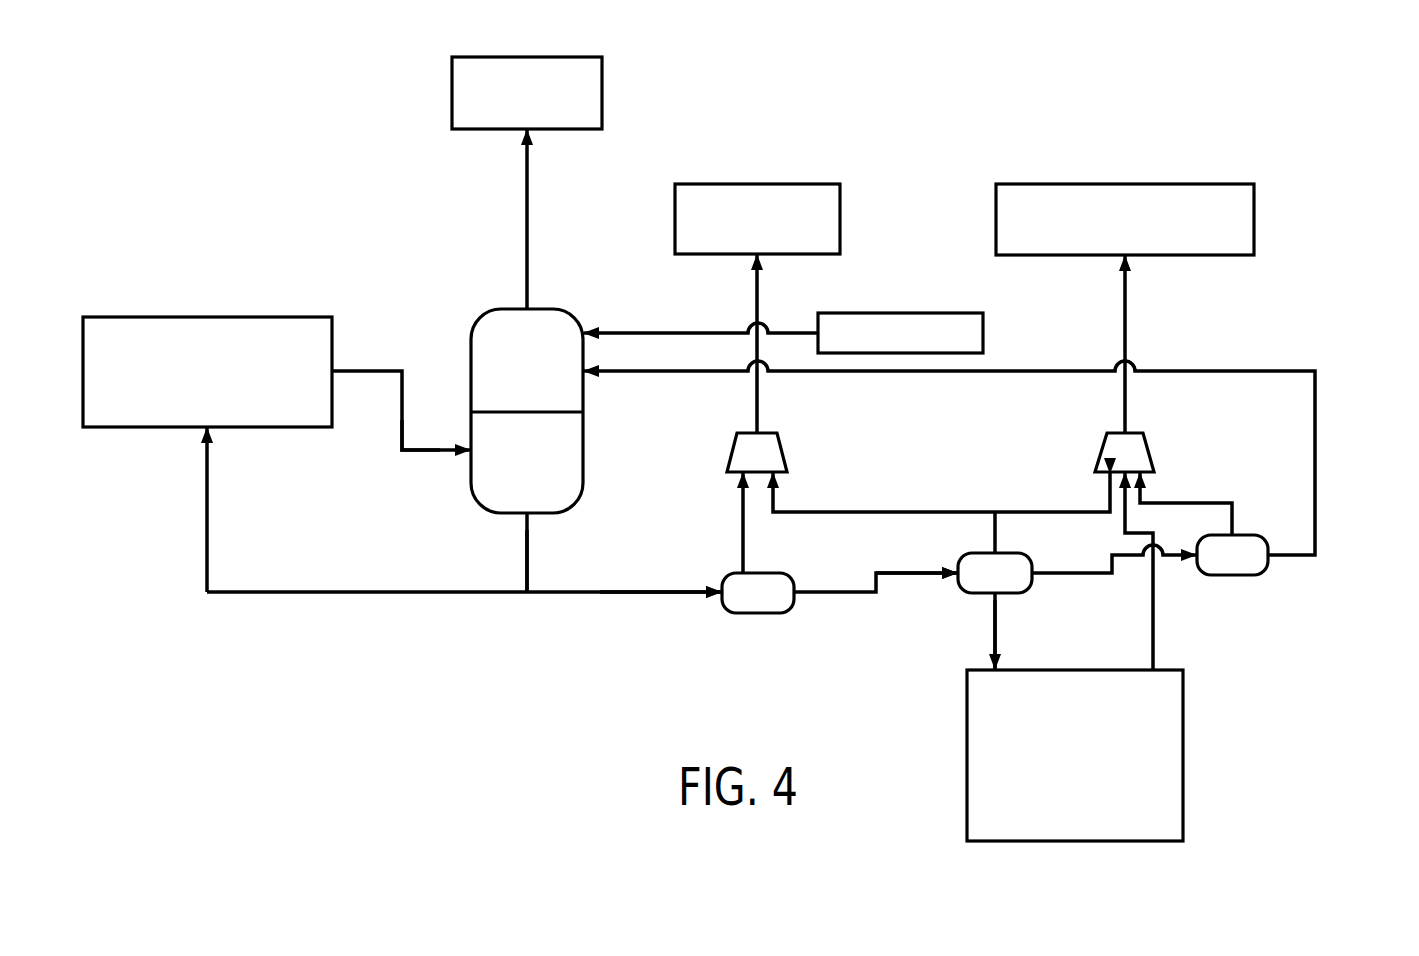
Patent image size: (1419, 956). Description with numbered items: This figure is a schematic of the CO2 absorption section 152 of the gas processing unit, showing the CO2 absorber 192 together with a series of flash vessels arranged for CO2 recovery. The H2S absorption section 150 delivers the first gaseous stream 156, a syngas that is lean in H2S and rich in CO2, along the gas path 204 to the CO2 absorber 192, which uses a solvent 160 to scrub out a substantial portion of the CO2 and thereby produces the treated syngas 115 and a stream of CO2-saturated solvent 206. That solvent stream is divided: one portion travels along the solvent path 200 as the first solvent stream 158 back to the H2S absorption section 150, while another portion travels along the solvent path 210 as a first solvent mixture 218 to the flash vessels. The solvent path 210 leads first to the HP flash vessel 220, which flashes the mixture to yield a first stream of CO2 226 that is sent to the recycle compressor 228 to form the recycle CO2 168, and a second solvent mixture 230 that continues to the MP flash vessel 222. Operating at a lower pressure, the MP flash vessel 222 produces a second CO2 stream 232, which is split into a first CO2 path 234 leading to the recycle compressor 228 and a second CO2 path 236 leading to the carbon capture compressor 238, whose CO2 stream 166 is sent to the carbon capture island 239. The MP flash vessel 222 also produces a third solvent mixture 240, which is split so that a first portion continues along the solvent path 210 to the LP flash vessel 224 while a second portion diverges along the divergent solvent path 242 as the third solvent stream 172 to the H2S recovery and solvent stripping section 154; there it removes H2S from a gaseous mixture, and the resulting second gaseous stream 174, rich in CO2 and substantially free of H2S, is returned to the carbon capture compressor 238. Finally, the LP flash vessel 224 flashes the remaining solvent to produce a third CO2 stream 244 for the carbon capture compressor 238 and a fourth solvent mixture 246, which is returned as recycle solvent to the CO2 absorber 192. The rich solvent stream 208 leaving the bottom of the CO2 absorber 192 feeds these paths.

The CO2 absorption section 152 is at (958, 111).
The H2S absorption section 150 is at (208, 316).
The CO2 absorber 192 is at (478, 312).
The treated syngas 115 is at (603, 97).
The recycle CO2 stream 168 is at (840, 220).
The solvent 160 is at (898, 313).
The carbon capture island 239 is at (1254, 219).
The CO2 stream 166 is at (1125, 305).
The first gaseous stream 156 is at (366, 371).
The gas path 204 is at (384, 457).
The first solvent stream 158 is at (392, 591).
The solvent path 200 is at (433, 600).
The stream of CO2-saturated solvent 206 is at (527, 548).
The rich solvent stream 208 is at (566, 545).
The solvent path 210 is at (622, 600).
The first solvent mixture 218 is at (600, 590).
The high pressure (HP) flash vessel 220 is at (758, 614).
The first stream of CO2 226 is at (743, 528).
The recycle compressor 228 is at (781, 447).
The second solvent mixture 230 is at (838, 594).
The second CO2 stream 232 is at (987, 530).
The medium pressure (MP) flash vessel 222 is at (1010, 553).
The second CO2 path 236 is at (1047, 512).
The first CO2 path 234 is at (868, 512).
The carbon capture compressor 238 is at (1150, 447).
The third solvent mixture 240 is at (1075, 573).
The low pressure (LP) flash vessel 224 is at (1232, 575).
The third CO2 stream 244 is at (1188, 503).
The fourth solvent mixture 246 is at (1315, 460).
The third solvent stream 172 is at (998, 620).
The divergent solvent path 242 is at (975, 625).
The second gaseous stream 174 is at (1157, 600).
The H2S recovery and solvent stripping section 154 is at (1184, 754).